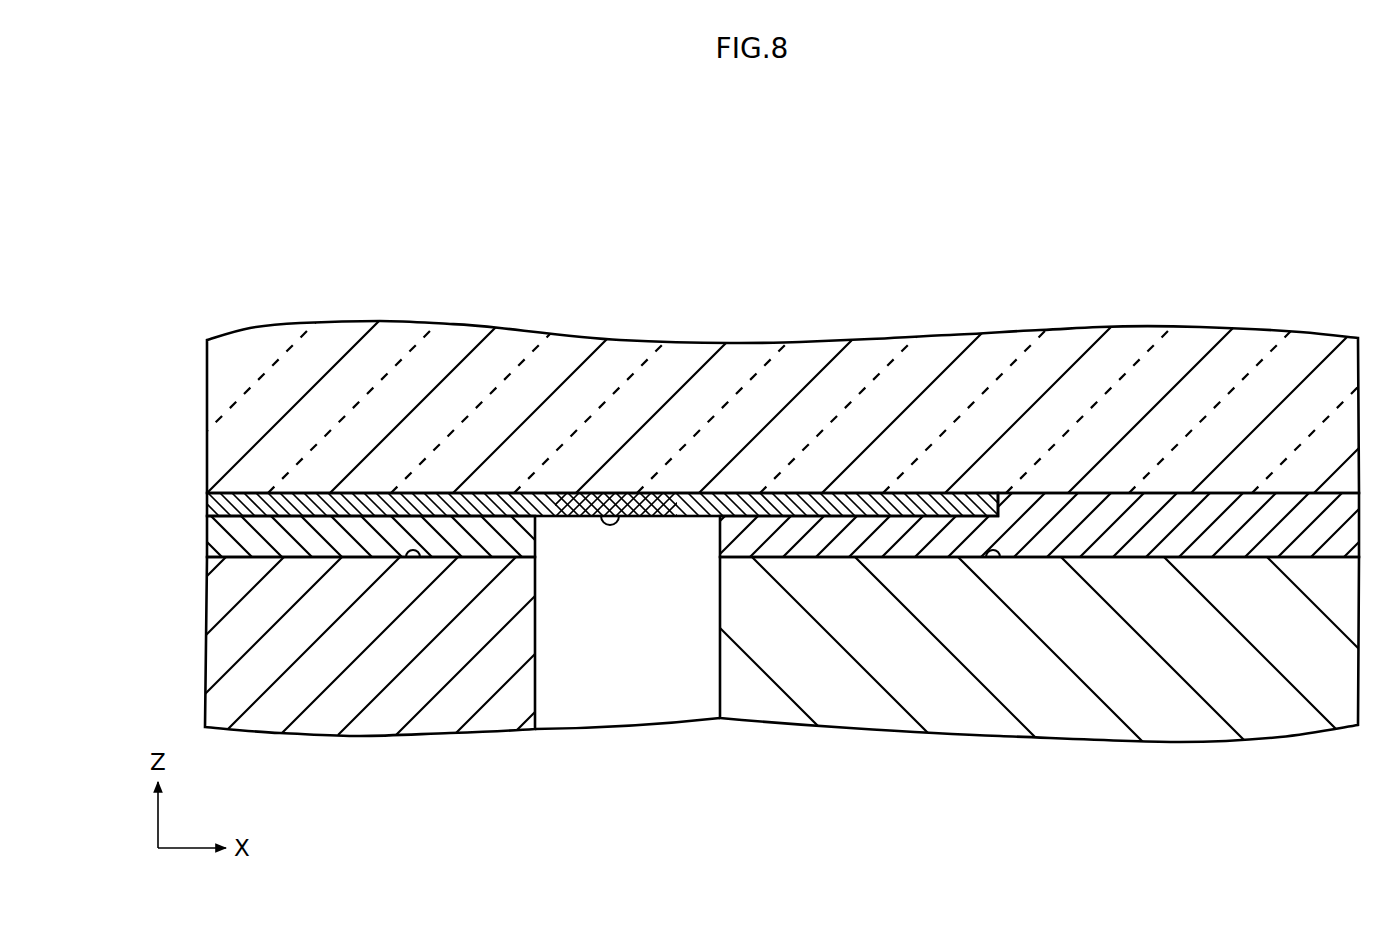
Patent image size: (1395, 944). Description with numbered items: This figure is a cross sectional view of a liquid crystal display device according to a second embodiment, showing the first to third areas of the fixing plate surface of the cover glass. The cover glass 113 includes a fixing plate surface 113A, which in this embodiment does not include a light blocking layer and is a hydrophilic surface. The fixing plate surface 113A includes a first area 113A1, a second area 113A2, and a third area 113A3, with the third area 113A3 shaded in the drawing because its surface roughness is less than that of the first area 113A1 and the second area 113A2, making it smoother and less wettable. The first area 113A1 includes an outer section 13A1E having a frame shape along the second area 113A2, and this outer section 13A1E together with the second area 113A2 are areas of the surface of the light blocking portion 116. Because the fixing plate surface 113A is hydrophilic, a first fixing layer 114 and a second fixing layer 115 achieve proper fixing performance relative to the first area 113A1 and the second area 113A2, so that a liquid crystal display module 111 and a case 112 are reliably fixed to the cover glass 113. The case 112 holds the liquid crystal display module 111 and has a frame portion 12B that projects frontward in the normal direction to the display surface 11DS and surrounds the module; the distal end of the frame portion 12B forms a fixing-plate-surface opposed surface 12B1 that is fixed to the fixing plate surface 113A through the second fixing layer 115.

The second area 113A2 is at (207, 190).
The third area 113A3 is at (662, 190).
The first area 113A1 is at (1358, 190).
The outer section 13A1E is at (998, 228).
The cover glass 113 is at (860, 372).
The fixing plate surface 113A is at (614, 512).
The light blocking portion 116 is at (738, 503).
The second fixing layer 115 is at (312, 535).
The first fixing layer 114 is at (905, 535).
The display surface 11DS is at (1007, 560).
The frame portion 12B is at (376, 712).
The case 112 is at (369, 686).
The fixing-plate-surface opposed surface 12B1 is at (425, 556).
The liquid crystal display module 111 is at (835, 697).